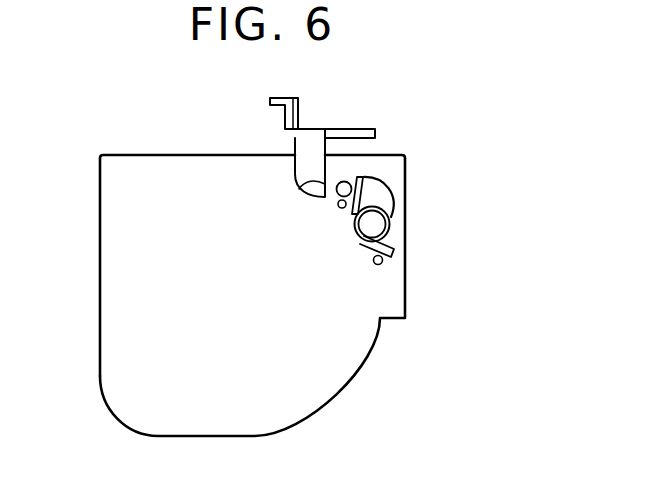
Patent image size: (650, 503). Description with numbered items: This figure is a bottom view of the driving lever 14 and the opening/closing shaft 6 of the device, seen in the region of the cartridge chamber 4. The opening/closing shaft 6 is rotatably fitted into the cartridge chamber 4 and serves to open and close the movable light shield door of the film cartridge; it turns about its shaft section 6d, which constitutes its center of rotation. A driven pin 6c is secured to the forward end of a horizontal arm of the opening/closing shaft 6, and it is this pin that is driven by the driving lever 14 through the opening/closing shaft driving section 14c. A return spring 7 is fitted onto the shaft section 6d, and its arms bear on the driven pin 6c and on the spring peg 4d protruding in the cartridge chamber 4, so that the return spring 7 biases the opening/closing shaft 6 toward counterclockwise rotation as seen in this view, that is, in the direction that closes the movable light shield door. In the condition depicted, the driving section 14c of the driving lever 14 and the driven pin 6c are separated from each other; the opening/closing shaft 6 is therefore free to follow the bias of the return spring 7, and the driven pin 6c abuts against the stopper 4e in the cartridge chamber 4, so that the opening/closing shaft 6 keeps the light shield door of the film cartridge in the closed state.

The cartridge chamber 4 is at (337, 380).
The spring peg 4d is at (382, 264).
The stopper 4e is at (339, 209).
The opening/closing shaft 6 is at (378, 191).
The driven pin 6c is at (345, 183).
The shaft section 6d is at (385, 217).
The return spring 7 is at (393, 248).
The driving lever 14 is at (354, 129).
The opening/closing shaft driving section 14c is at (298, 185).